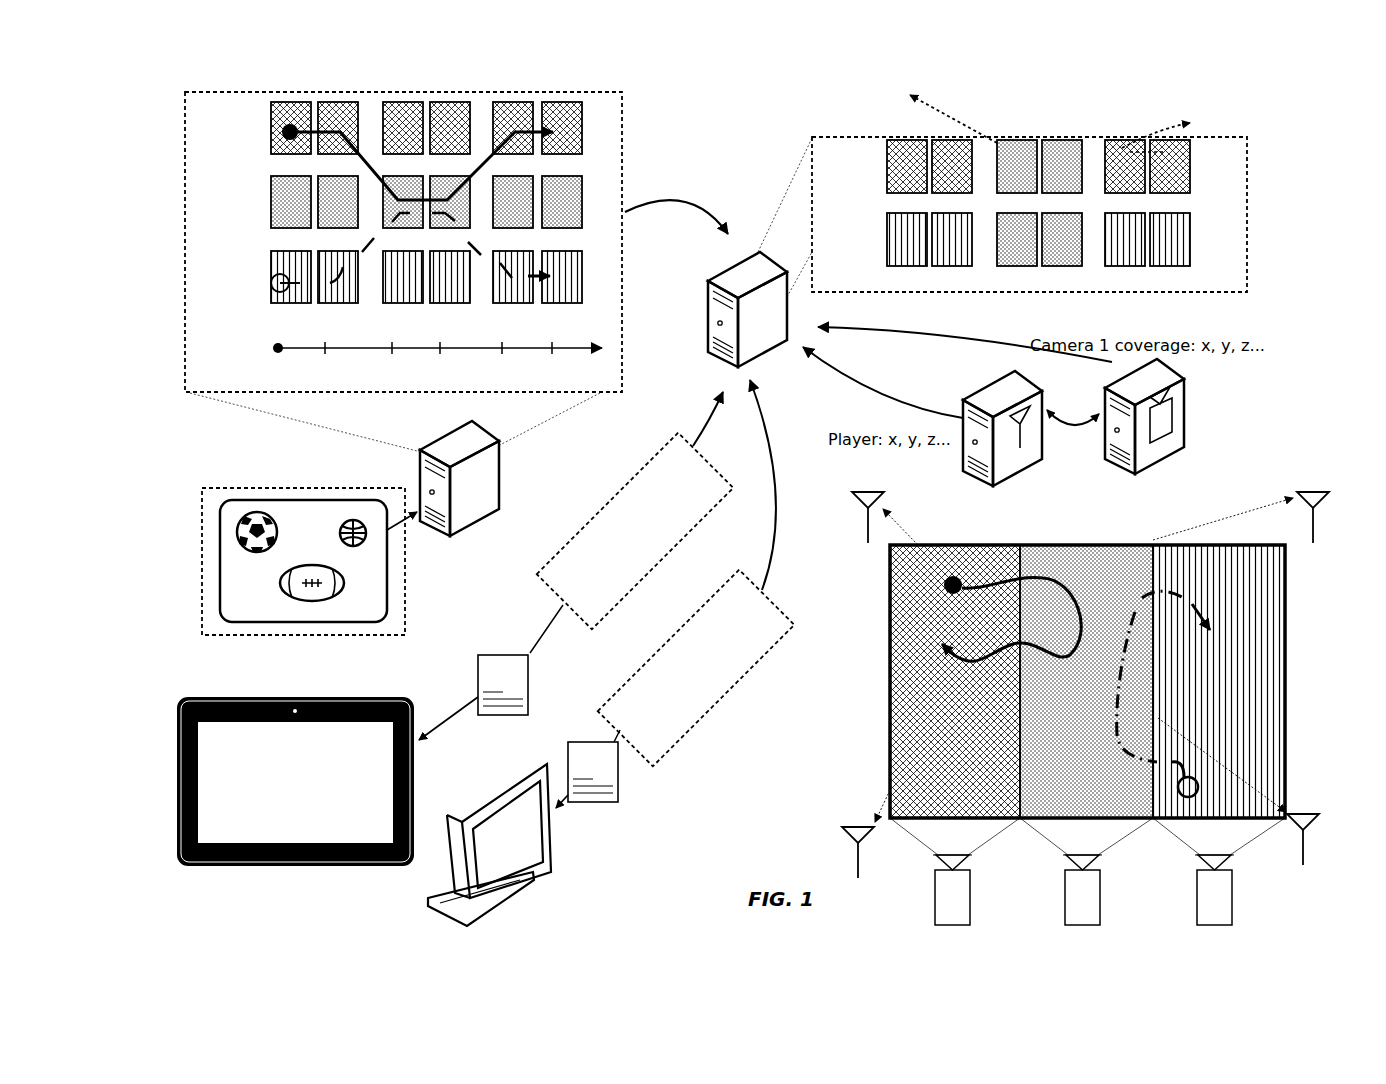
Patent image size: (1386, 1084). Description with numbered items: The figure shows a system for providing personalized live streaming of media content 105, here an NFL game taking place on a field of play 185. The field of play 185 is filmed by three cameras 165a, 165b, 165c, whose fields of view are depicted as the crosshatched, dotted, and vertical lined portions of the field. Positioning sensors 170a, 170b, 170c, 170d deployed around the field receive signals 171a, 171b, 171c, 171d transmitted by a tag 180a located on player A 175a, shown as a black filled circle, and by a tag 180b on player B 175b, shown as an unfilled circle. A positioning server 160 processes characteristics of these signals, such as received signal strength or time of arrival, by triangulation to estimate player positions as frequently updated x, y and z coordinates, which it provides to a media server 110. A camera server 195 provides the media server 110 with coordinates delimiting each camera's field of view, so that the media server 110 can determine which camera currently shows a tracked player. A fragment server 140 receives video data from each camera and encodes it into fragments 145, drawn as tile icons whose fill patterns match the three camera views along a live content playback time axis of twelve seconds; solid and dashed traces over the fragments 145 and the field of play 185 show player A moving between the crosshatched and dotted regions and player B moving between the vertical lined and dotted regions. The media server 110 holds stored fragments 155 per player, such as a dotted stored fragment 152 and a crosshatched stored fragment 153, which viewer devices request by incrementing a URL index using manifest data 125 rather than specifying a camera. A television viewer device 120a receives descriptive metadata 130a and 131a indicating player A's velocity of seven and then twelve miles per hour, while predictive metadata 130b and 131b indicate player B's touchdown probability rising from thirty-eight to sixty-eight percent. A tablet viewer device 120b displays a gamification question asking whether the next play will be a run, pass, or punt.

The media content 105 is at (296, 488).
The media server 110 is at (727, 275).
The viewer device 120a is at (458, 808).
The viewer device 120b is at (285, 698).
The manifest data 125 is at (492, 655).
The metadata 130a is at (641, 680).
The metadata 130b is at (588, 545).
The metadata 131a is at (713, 613).
The metadata 131b is at (647, 476).
The fragment server 140 is at (447, 446).
The fragments 145 is at (403, 232).
The stored fragment 152 is at (726, 103).
The stored fragment 153 is at (1157, 88).
The stored fragments 155 is at (1029, 202).
The positioning server 160 is at (987, 394).
The camera 165a is at (935, 915).
The camera 165b is at (1065, 915).
The camera 165c is at (1197, 915).
The positioning sensor 170a is at (1311, 491).
The positioning sensor 170b is at (1308, 814).
The positioning sensor 170c is at (858, 826).
The positioning sensor 170d is at (870, 491).
The signal 171a is at (1215, 516).
The signal 171b is at (1255, 790).
The signal 171c is at (875, 812).
The signal 171d is at (882, 522).
The player A 175a is at (952, 576).
The player B 175b is at (1192, 778).
The tag 180a is at (966, 527).
The tag 180b is at (1288, 697).
The field of play 185 is at (890, 690).
The camera server 195 is at (1107, 390).